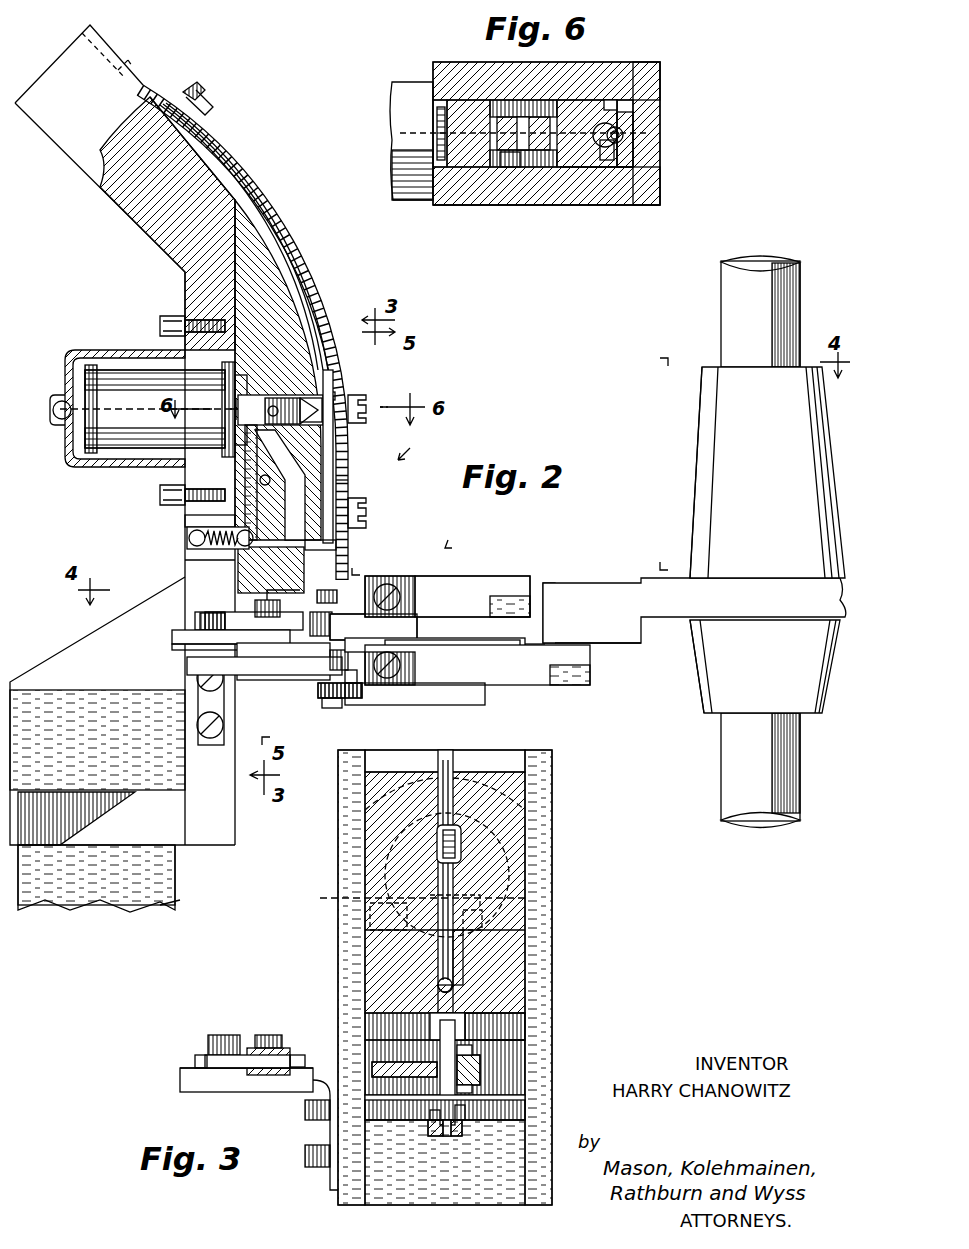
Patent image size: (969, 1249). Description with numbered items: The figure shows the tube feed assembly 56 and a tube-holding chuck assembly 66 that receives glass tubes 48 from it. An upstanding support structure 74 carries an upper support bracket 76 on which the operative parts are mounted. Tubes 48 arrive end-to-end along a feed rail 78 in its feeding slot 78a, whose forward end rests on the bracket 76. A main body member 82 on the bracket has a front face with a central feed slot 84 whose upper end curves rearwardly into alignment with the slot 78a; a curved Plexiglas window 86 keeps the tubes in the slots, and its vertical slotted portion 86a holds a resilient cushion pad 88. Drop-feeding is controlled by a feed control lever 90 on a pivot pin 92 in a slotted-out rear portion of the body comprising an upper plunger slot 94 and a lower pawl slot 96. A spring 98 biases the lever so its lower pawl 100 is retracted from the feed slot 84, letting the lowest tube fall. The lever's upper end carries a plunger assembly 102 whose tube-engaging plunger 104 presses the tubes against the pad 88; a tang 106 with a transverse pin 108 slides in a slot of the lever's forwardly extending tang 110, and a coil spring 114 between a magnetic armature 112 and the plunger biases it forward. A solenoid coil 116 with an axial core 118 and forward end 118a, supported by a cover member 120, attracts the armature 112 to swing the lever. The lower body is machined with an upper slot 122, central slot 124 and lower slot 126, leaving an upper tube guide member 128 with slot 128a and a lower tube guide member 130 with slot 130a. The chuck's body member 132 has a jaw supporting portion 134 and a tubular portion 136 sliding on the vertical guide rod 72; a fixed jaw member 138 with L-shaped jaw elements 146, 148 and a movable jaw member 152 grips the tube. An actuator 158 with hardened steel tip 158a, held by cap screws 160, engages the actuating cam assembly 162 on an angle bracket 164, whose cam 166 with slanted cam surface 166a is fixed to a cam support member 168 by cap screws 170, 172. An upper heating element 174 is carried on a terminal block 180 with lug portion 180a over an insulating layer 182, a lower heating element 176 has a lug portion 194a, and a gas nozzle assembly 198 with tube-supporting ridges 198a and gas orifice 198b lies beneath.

In FIG. 6, the tubes 48 is at (612, 150).
In FIG. 2, the tubes 48 is at (205, 115).
In FIG. 3, the tubes 48 is at (450, 790).
In FIG. 2, the tube feed assembly 56 is at (413, 447).
In FIG. 2, the tube-holding chuck assembly 66 is at (445, 560).
In FIG. 2, the vertical guide rod 72 is at (785, 262).
In FIG. 2, the upstanding support structure 74 is at (172, 878).
In FIG. 2, the upper support bracket 76 is at (185, 568).
In FIG. 3, the upper support bracket 76 is at (560, 957).
In FIG. 2, the feed rail 78 is at (148, 225).
In FIG. 2, the feeding slot 78a is at (82, 33).
In FIG. 6, the main body member 82 is at (565, 205).
In FIG. 2, the main body member 82 is at (300, 300).
In FIG. 3, the main body member 82 is at (512, 897).
In FIG. 6, the central feed slot 84 is at (660, 102).
In FIG. 2, the central feed slot 84 is at (312, 262).
In FIG. 3, the central feed slot 84 is at (440, 945).
In FIG. 6, the Plexiglas window 86 is at (660, 70).
In FIG. 2, the Plexiglas window 86 is at (230, 150).
In FIG. 3, the Plexiglas window 86 is at (490, 760).
In FIG. 6, the vertical slotted portion 86a is at (620, 133).
In FIG. 2, the vertical slotted portion 86a is at (350, 492).
In FIG. 6, the resilient cushion pad 88 is at (640, 128).
In FIG. 2, the resilient cushion pad 88 is at (350, 470).
In FIG. 2, the feed control lever 90 is at (235, 515).
In FIG. 3, the feed control lever 90 is at (465, 980).
In FIG. 2, the pivot pin 92 is at (270, 478).
In FIG. 3, the pivot pin 92 is at (414, 875).
In FIG. 6, the upper plunger slot 94 is at (462, 172).
In FIG. 2, the upper plunger slot 94 is at (300, 395).
In FIG. 2, the lower pawl slot 96 is at (365, 515).
In FIG. 3, the lower pawl slot 96 is at (440, 1005).
In FIG. 2, the spring 98 is at (188, 537).
In FIG. 2, the lower pawl 100 is at (340, 545).
In FIG. 3, the lower pawl 100 is at (440, 990).
In FIG. 6, the plunger assembly 102 is at (585, 105).
In FIG. 2, the plunger assembly 102 is at (312, 405).
In FIG. 6, the tube-engaging plunger 104 is at (585, 205).
In FIG. 2, the tube-engaging plunger 104 is at (322, 415).
In FIG. 3, the tube-engaging plunger 104 is at (462, 845).
In FIG. 6, the tang 106 is at (520, 100).
In FIG. 2, the tang 106 is at (330, 395).
In FIG. 6, the transverse pin 108 is at (508, 167).
In FIG. 2, the transverse pin 108 is at (268, 395).
In FIG. 6, the forwardly extending tang 110 is at (530, 168).
In FIG. 2, the forwardly extending tang 110 is at (334, 455).
In FIG. 6, the magnetic armature 112 is at (440, 65).
In FIG. 2, the magnetic armature 112 is at (222, 430).
In FIG. 6, the coil spring 114 is at (538, 112).
In FIG. 2, the coil spring 114 is at (240, 440).
In FIG. 6, the solenoid coil 116 is at (433, 125).
In FIG. 2, the solenoid coil 116 is at (90, 433).
In FIG. 3, the solenoid coil 116 is at (365, 812).
In FIG. 2, the axial core 118 is at (72, 395).
In FIG. 6, the forward end of core 118a is at (440, 130).
In FIG. 2, the forward end of core 118a is at (235, 405).
In FIG. 2, the cover member 120 is at (105, 352).
In FIG. 2, the upper slot 122 is at (310, 560).
In FIG. 3, the upper slot 122 is at (525, 1020).
In FIG. 2, the central slot 124 is at (200, 680).
In FIG. 3, the central slot 124 is at (525, 1062).
In FIG. 2, the lower slot 126 is at (300, 676).
In FIG. 3, the lower slot 126 is at (525, 1112).
In FIG. 2, the upper tube guide member 128 is at (255, 607).
In FIG. 3, the upper tube guide member 128 is at (370, 1045).
In FIG. 3, the upper guide slot 128a is at (440, 1035).
In FIG. 2, the lower tube guide member 130 is at (345, 660).
In FIG. 3, the lower tube guide member 130 is at (450, 1115).
In FIG. 3, the lower guide slot 130a is at (445, 1090).
In FIG. 2, the chuck body member 132 is at (600, 583).
In FIG. 2, the jaw supporting portion 134 is at (560, 583).
In FIG. 2, the tubular portion 136 is at (700, 425).
In FIG. 2, the fixed jaw member 138 is at (612, 643).
In FIG. 3, the fixed jaw member 138 is at (480, 1070).
In FIG. 3, the L-shaped jaw element 146 is at (472, 1050).
In FIG. 3, the L-shaped jaw element 148 is at (472, 1090).
In FIG. 2, the movable jaw member 152 is at (472, 645).
In FIG. 3, the movable jaw member 152 is at (372, 1072).
In FIG. 2, the actuator 158 is at (400, 620).
In FIG. 2, the hardened steel tip 158a is at (320, 640).
In FIG. 3, the hardened steel tip 158a is at (275, 1075).
In FIG. 2, the cap screws 160 is at (400, 660).
In FIG. 2, the actuating cam assembly 162 is at (172, 637).
In FIG. 3, the actuating cam assembly 162 is at (258, 994).
In FIG. 2, the angle bracket 164 is at (197, 723).
In FIG. 3, the angle bracket 164 is at (325, 1188).
In FIG. 2, the cam 166 is at (240, 620).
In FIG. 3, the cam 166 is at (245, 1050).
In FIG. 2, the slanted cam surface 166a is at (305, 630).
In FIG. 3, the slanted cam surface 166a is at (200, 1060).
In FIG. 2, the cam support member 168 is at (175, 648).
In FIG. 3, the cam support member 168 is at (182, 1078).
In FIG. 2, the cap screws 170 is at (200, 621).
In FIG. 3, the cap screws 170 is at (210, 1058).
In FIG. 3, the cap screws 172 is at (210, 1038).
In FIG. 2, the upper heating element 174 is at (370, 590).
In FIG. 3, the upper heating element 174 is at (494, 1026).
In FIG. 2, the lower heating element 176 is at (355, 685).
In FIG. 3, the lower heating element 176 is at (432, 1112).
In FIG. 2, the terminal block 180 is at (470, 576).
In FIG. 2, the lug portion 180a is at (500, 596).
In FIG. 2, the insulating layer 182 is at (528, 620).
In FIG. 2, the lug portion 194a is at (575, 683).
In FIG. 2, the gas nozzle assembly 198 is at (320, 698).
In FIG. 3, the gas nozzle assembly 198 is at (460, 1136).
In FIG. 3, the tube-supporting ridges 198a is at (432, 1136).
In FIG. 3, the gas orifice 198b is at (452, 1136).